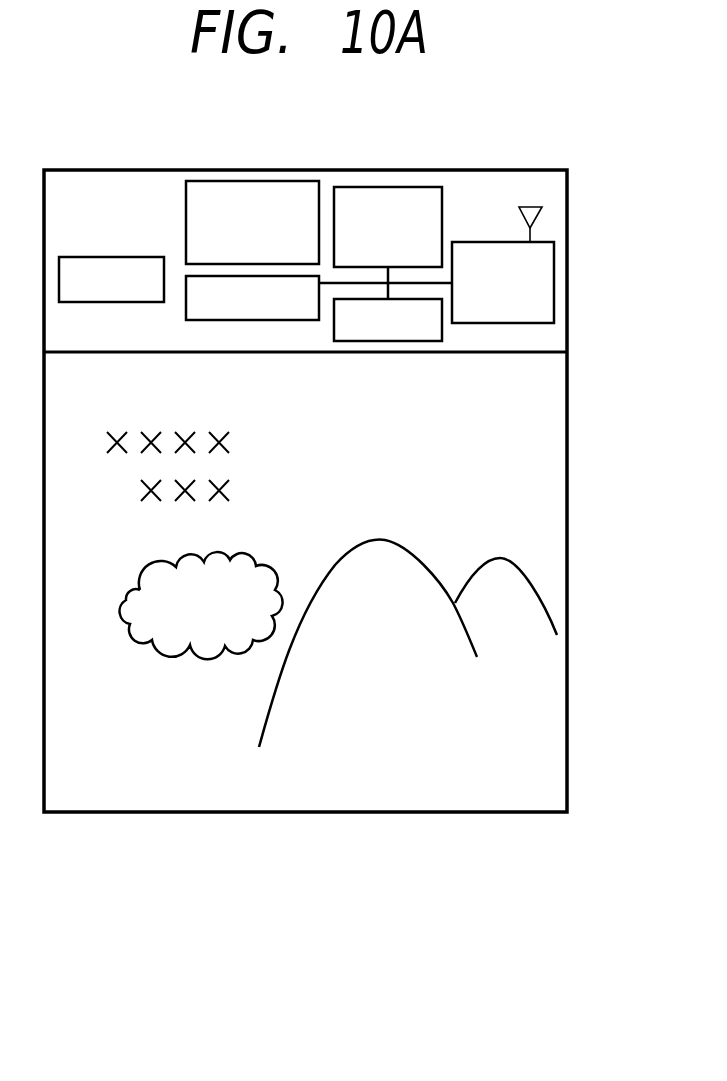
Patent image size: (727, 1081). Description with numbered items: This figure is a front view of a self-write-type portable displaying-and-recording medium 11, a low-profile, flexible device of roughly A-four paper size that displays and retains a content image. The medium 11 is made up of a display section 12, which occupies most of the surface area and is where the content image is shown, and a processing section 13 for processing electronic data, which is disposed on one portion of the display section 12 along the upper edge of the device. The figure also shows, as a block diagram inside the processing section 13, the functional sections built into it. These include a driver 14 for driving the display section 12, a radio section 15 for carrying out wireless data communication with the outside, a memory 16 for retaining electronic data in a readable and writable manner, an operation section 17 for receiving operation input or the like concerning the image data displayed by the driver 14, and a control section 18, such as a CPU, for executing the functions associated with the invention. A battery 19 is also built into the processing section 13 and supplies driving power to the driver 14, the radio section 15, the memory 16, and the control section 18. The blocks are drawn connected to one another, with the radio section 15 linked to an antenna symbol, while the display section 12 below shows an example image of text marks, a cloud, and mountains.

The self-write-type portable displaying-and-recording medium 11 is at (595, 368).
The display section 12 is at (567, 485).
The processing section 13 is at (567, 230).
The driver 14 is at (216, 320).
The radio section 15 is at (480, 323).
The memory 16 is at (369, 341).
The operation section 17 is at (288, 181).
The control section 18 is at (410, 187).
The battery 19 is at (118, 257).